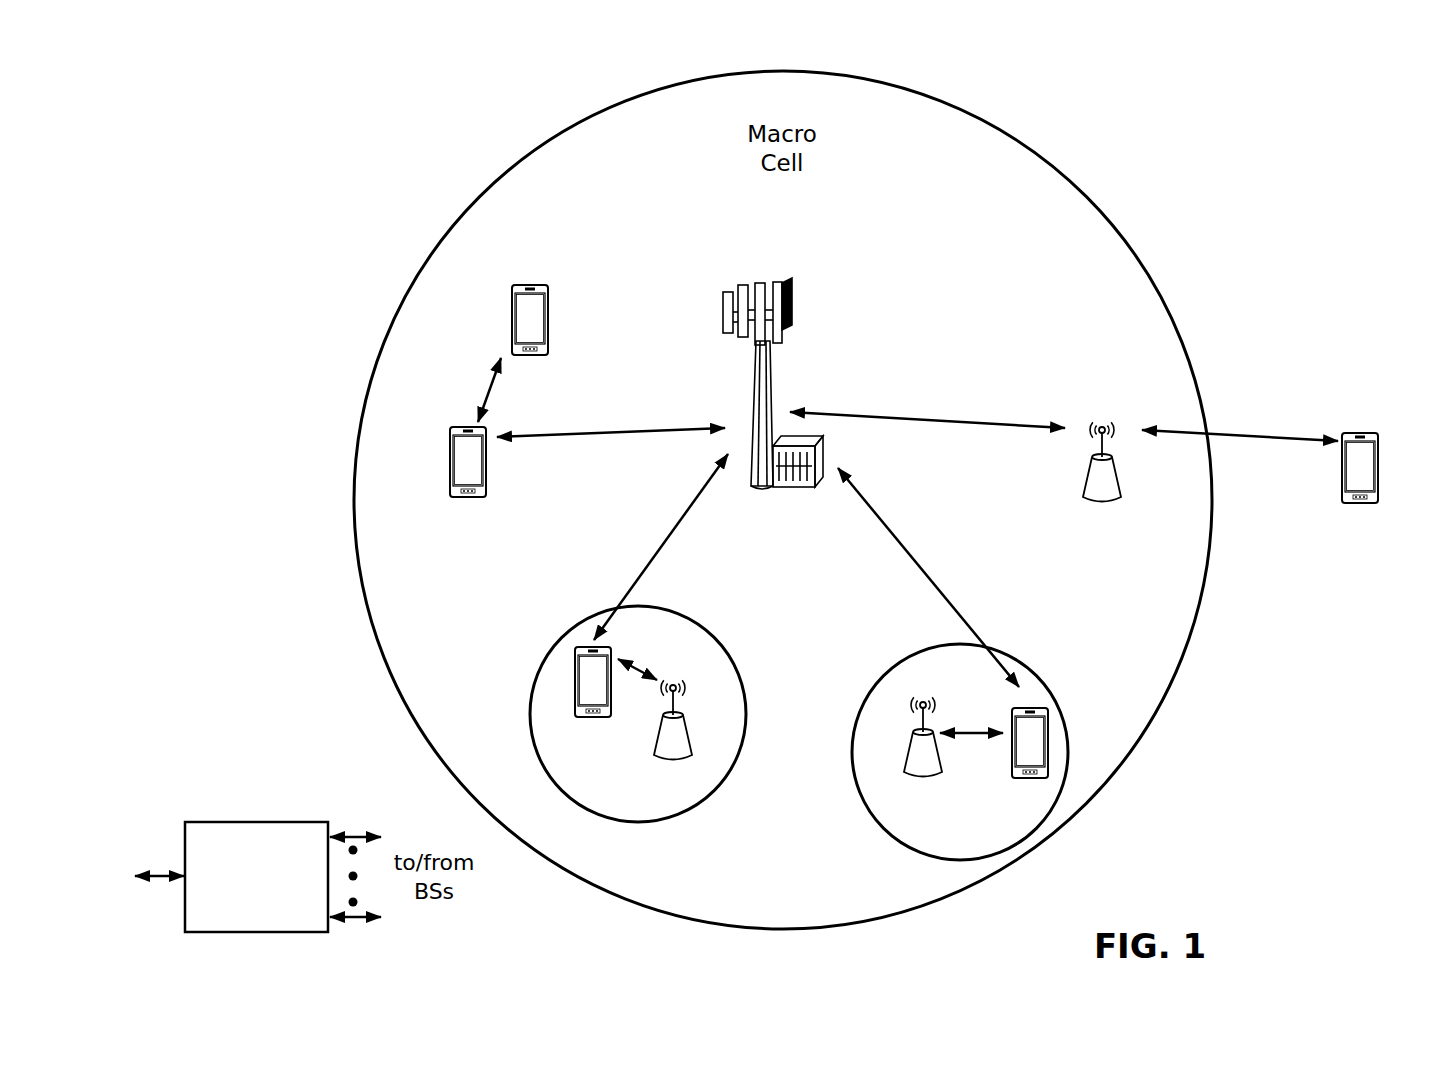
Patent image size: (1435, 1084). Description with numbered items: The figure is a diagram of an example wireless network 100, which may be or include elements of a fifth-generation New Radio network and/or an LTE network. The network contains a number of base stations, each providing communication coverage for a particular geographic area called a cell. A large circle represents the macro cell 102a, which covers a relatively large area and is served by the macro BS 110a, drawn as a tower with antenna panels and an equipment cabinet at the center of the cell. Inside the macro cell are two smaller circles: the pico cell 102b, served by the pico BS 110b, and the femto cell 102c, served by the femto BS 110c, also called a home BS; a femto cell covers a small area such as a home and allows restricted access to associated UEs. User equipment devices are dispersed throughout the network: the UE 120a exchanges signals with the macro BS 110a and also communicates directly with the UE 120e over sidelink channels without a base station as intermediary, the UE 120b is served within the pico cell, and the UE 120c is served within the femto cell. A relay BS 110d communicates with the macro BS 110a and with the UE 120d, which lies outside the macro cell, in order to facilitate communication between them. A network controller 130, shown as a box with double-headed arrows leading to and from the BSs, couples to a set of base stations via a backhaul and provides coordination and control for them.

The wireless network 100 is at (232, 65).
The macro cell 102a is at (1067, 176).
The pico cell 102b is at (730, 653).
The femto cell 102c is at (896, 663).
The macro BS 110a is at (769, 276).
The pico BS 110b is at (694, 748).
The femto BS 110c is at (906, 762).
The relay BS 110d is at (1103, 418).
The UE 120a is at (450, 458).
The UE 120b is at (578, 717).
The UE 120c is at (1012, 778).
The UE 120d is at (1370, 434).
The UE 120e is at (512, 307).
The network controller 130 is at (256, 822).